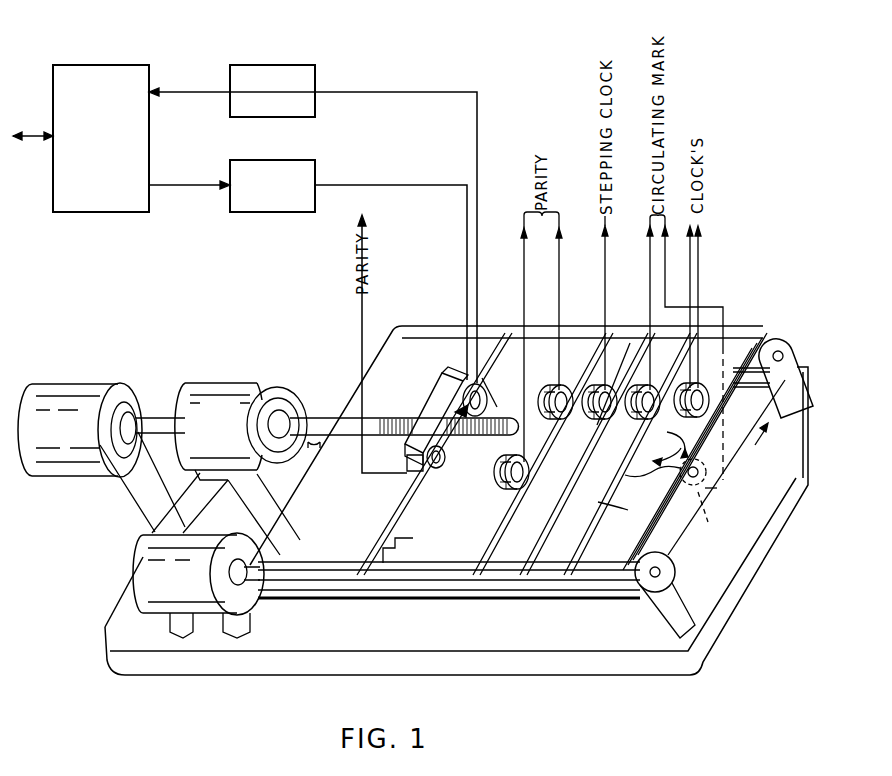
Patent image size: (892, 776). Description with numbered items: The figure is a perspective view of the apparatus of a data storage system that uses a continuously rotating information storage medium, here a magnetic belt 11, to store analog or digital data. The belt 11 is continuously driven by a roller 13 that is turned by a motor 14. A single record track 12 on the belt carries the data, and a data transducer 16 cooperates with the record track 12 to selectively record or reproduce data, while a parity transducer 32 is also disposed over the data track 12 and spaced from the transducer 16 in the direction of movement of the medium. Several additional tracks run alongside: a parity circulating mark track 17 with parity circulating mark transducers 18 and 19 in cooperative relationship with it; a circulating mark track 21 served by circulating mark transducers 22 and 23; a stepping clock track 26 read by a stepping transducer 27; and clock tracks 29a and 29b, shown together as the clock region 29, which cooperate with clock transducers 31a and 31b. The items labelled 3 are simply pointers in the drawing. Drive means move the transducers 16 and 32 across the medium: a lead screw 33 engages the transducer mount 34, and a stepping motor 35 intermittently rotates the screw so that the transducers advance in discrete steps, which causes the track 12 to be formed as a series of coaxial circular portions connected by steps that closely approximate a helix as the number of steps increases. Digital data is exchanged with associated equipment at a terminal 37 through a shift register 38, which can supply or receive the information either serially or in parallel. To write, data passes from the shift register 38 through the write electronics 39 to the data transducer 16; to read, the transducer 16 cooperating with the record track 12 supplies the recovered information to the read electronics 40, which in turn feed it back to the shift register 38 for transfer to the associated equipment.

The arrow 3 is at (665, 445).
The magnetic belt 11 is at (675, 559).
The record track 12 is at (377, 519).
The roller 13 is at (668, 552).
The motor 14 is at (140, 557).
The data transducer 16 is at (404, 413).
The parity circulating mark track 17 is at (500, 518).
The parity circulating mark transducer 18 is at (500, 479).
The parity circulating mark transducer 19 is at (550, 387).
The circulating mark track 21 is at (592, 519).
The circulating mark transducer 22 is at (622, 428).
The circulating mark transducer 23 is at (712, 524).
The stepping clock track 26 is at (550, 517).
The stepping transducer 27 is at (590, 424).
The circulating mark 29 is at (698, 473).
The clock track 29a is at (625, 478).
The clock track 29b is at (598, 503).
The clock transducer 31a is at (680, 390).
The clock transducer 31b is at (648, 357).
The parity transducer 32 is at (407, 475).
The lead screw 33 is at (315, 410).
The transducer mount 34 is at (423, 404).
The stepping motor 35 is at (69, 383).
The terminal 37 is at (33, 135).
The shift register 38 is at (88, 64).
The write electronics 39 is at (300, 158).
The read electronics 40 is at (277, 65).